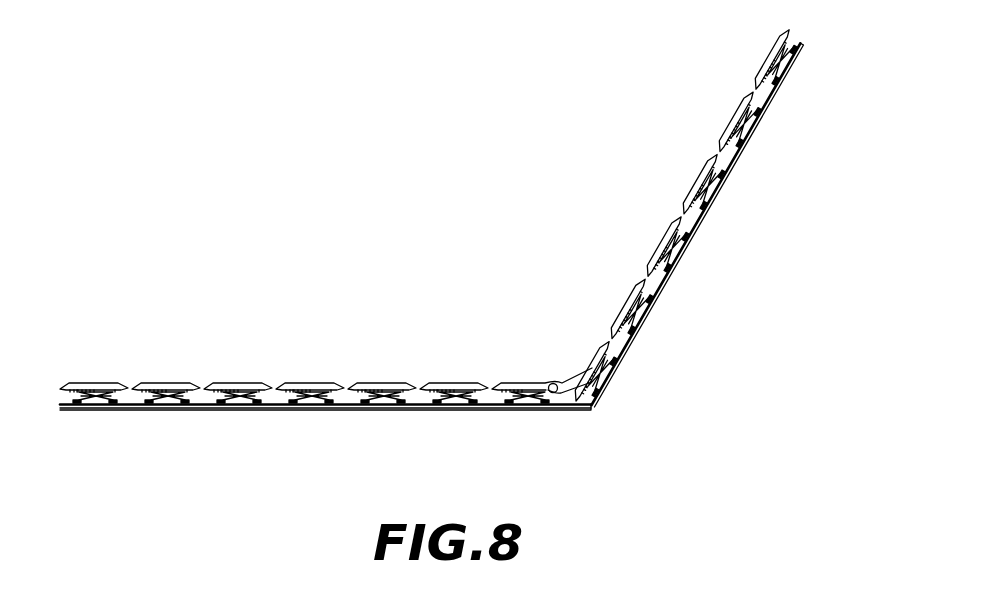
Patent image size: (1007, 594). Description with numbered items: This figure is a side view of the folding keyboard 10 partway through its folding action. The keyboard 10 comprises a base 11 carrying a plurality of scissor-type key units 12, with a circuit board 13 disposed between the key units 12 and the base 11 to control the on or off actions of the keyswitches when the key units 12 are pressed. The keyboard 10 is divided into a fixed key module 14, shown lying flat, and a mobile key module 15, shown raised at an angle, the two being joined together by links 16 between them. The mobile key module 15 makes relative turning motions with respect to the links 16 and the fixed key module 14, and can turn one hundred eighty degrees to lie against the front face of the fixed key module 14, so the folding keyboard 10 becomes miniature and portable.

The folding keyboard 10 is at (312, 316).
The base 11 is at (152, 409).
The key units 12 is at (243, 385).
The circuit board 13 is at (133, 386).
The fixed key module 14 is at (260, 420).
The mobile key module 15 is at (682, 283).
The links 16 is at (574, 378).